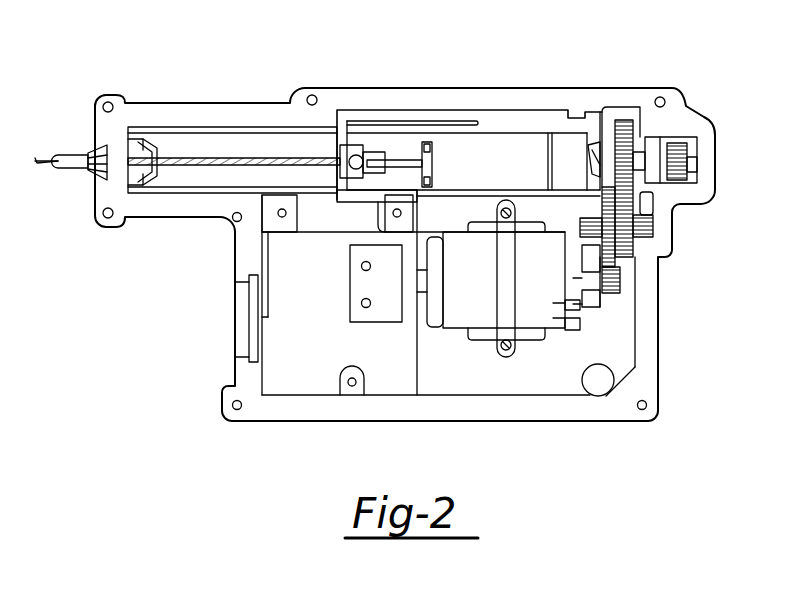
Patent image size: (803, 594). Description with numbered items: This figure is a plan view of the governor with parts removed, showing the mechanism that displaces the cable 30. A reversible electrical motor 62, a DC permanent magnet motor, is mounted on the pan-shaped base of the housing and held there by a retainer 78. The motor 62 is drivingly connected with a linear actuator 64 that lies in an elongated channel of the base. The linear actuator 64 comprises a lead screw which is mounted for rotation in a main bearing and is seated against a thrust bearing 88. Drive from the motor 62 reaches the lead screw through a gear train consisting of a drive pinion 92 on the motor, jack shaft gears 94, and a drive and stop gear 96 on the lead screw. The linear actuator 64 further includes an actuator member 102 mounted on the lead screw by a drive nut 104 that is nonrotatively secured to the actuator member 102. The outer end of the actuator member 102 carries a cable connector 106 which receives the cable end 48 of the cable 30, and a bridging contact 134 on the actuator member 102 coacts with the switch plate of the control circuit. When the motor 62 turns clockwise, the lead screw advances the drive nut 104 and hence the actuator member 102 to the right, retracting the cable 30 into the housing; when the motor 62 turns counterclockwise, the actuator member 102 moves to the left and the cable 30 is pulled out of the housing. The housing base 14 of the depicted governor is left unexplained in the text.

The housing 14 is at (507, 422).
The cable 30 is at (72, 152).
The cable end 48 is at (353, 170).
The reversible electrical motor 62 is at (472, 322).
The linear actuator 64 is at (500, 128).
The retainer 78 is at (512, 278).
The thrust bearing 88 is at (680, 148).
The drive pinion 92 is at (615, 290).
The jack shaft gears 94 is at (628, 210).
The drive and stop gear 96 is at (615, 125).
The actuator member 102 is at (482, 190).
The drive nut 104 is at (551, 188).
The cable connector 106 is at (340, 157).
The bridging contact 134 is at (432, 165).